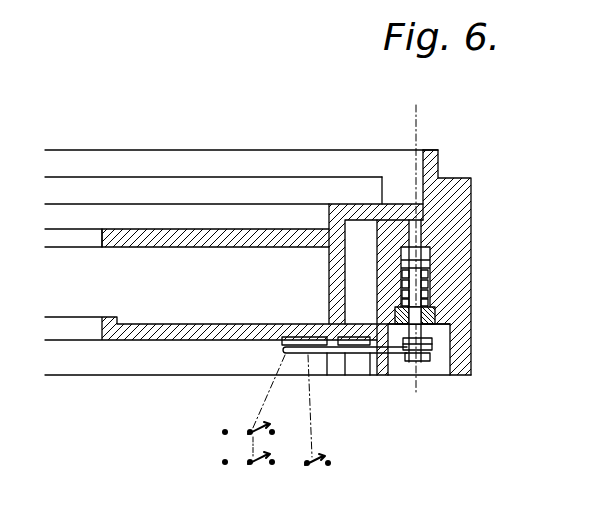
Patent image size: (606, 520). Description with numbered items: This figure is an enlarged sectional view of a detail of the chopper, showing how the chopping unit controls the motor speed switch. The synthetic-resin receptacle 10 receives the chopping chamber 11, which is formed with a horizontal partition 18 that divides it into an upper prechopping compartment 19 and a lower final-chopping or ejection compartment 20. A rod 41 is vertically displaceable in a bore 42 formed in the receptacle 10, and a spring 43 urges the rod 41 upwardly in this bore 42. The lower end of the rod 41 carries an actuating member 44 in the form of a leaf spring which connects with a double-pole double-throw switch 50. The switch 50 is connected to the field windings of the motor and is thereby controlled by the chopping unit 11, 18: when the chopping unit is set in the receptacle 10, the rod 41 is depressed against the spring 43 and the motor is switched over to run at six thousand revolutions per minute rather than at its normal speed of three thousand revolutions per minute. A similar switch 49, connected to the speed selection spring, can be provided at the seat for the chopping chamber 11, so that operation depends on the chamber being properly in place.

The receptacle 10 is at (462, 256).
The chopping chamber 11 is at (328, 287).
The horizontal partition 18 is at (265, 233).
The upper prechopping compartment 19 is at (148, 213).
The lower final-chopping compartment 20 is at (246, 310).
The rod 41 is at (412, 235).
The bore 42 is at (432, 290).
The spring 43 is at (436, 312).
The actuating member 44 is at (350, 356).
The switch 49 is at (314, 466).
The double-pole double-throw switch 50 is at (238, 446).